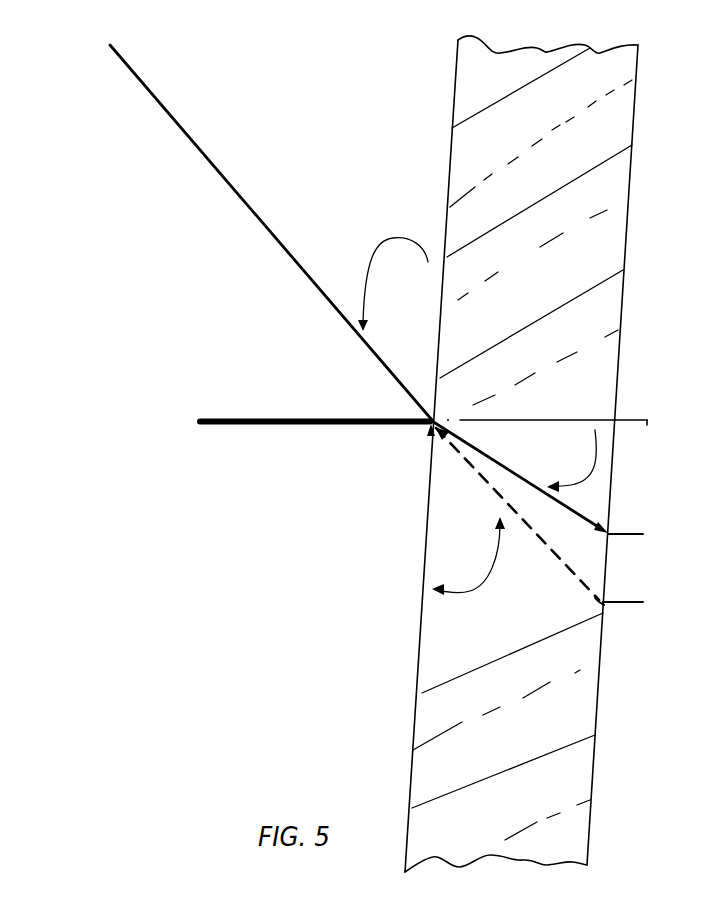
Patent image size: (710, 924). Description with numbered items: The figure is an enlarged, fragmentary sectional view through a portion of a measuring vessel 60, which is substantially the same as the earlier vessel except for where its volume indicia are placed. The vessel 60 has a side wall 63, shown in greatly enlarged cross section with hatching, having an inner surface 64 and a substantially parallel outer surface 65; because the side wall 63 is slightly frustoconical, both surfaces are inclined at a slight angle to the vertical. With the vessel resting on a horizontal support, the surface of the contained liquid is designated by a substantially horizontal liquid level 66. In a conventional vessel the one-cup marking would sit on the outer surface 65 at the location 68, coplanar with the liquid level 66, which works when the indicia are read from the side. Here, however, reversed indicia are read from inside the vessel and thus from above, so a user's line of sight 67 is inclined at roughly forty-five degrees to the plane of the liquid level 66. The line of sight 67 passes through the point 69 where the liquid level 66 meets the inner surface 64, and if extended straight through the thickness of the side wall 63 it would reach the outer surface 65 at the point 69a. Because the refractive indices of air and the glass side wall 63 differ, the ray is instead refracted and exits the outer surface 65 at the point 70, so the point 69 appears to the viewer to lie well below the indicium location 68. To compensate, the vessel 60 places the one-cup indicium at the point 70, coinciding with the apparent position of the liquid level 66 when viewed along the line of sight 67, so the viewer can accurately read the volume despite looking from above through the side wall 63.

The measuring vessel 60 is at (378, 75).
The side wall 63 is at (577, 783).
The inner surface 64 is at (448, 176).
The outer surface 65 is at (627, 292).
The liquid level 66 is at (257, 415).
The line of sight 67 is at (287, 253).
The indicium location 68 is at (618, 417).
The point 69 is at (431, 416).
The point 69a is at (602, 607).
The point 70 is at (608, 533).